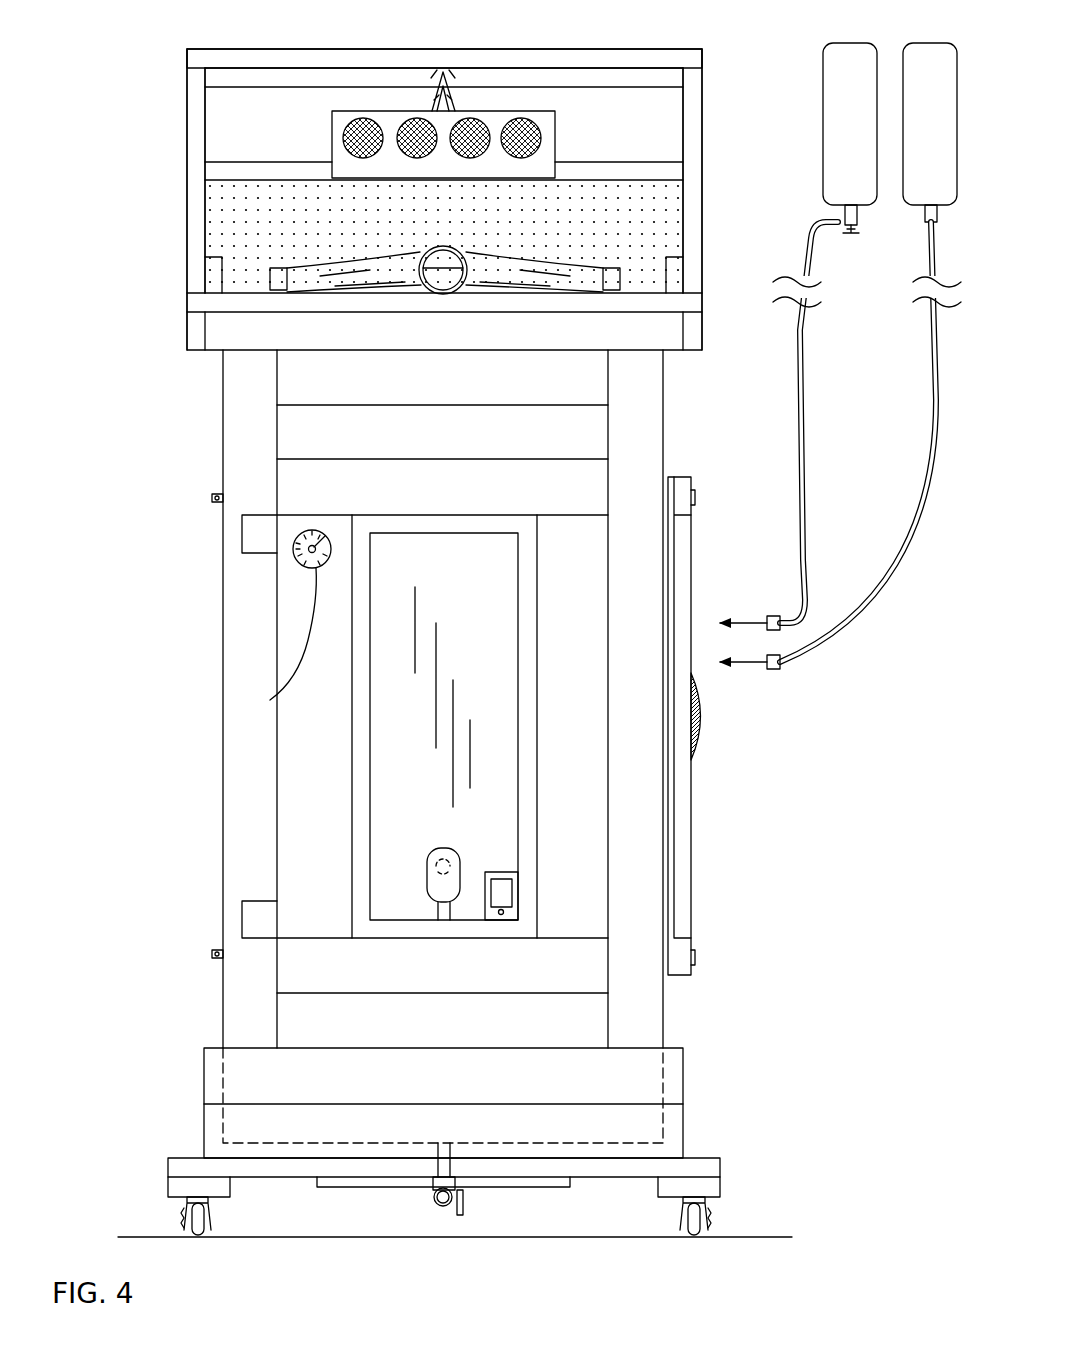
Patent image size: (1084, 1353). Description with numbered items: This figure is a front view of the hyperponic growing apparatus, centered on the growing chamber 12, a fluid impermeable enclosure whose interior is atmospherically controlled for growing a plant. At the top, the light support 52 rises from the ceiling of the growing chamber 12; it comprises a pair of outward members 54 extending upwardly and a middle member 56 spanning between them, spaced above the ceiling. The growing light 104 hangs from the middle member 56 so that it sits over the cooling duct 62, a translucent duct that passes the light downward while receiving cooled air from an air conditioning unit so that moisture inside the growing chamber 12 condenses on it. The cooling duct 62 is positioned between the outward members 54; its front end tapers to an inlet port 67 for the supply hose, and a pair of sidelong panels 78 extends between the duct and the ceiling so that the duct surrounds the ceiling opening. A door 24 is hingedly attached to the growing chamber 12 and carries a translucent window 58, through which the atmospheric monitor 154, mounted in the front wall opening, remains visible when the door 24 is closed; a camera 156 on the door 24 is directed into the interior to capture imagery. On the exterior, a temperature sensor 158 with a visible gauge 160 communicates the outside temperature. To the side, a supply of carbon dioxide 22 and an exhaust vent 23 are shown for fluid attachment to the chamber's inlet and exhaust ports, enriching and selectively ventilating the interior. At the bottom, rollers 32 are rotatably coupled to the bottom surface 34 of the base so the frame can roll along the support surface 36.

The growing chamber 12 is at (128, 465).
The supply of carbon dioxide 22 is at (826, 43).
The exhaust vent 23 is at (926, 43).
The door 24 is at (691, 855).
The rollers 32 is at (185, 1222).
The bottom surface 34 is at (600, 1177).
The support surface 36 is at (760, 1237).
The light support 52 is at (187, 49).
The outward members 54 is at (187, 170).
The middle member 56 is at (481, 57).
The window 58 is at (420, 725).
The cooling duct 62 is at (350, 261).
The inlet port 67 is at (438, 282).
The sidelong panels 78 is at (272, 278).
The growing light 104 is at (380, 110).
The atmospheric monitor 154 is at (500, 872).
The camera 156 is at (432, 848).
The temperature sensor 158 is at (308, 640).
The gauge 160 is at (300, 568).